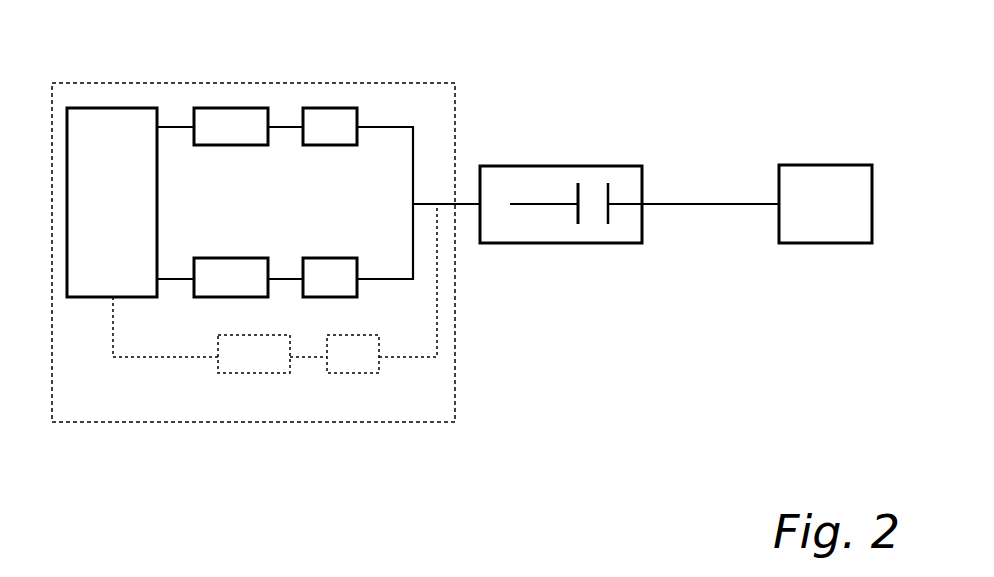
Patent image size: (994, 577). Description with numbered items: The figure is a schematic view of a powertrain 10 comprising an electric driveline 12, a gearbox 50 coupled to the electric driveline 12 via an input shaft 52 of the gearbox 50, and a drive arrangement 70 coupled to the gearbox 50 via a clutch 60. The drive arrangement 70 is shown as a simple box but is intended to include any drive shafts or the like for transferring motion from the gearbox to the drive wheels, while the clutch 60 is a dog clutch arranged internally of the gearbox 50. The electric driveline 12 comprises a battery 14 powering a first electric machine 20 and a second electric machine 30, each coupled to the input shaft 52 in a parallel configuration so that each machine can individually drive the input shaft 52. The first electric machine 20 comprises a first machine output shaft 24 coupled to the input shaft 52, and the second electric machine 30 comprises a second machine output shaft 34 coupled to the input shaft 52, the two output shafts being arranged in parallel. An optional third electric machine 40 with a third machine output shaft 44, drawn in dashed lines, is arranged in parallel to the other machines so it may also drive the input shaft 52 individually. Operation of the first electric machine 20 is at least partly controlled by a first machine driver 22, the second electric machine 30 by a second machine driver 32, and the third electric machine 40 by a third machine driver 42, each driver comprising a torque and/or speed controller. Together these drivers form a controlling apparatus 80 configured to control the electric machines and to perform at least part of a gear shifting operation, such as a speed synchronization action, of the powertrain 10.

The powertrain 10 is at (613, 432).
The electric driveline 12 is at (128, 422).
The battery 14 is at (120, 108).
The first electric machine 20 is at (327, 108).
The first machine driver 22 is at (233, 108).
The first machine output shaft 24 is at (398, 127).
The second electric machine 30 is at (340, 257).
The second machine driver 32 is at (212, 300).
The second machine output shaft 34 is at (385, 283).
The third electric machine 40 is at (353, 373).
The third machine driver 42 is at (257, 373).
The third machine output shaft 44 is at (402, 357).
The gearbox 50 is at (558, 243).
The input shaft 52 is at (455, 204).
The clutch 60 is at (596, 170).
The drive arrangement 70 is at (822, 245).
The controlling apparatus 80 is at (252, 166).